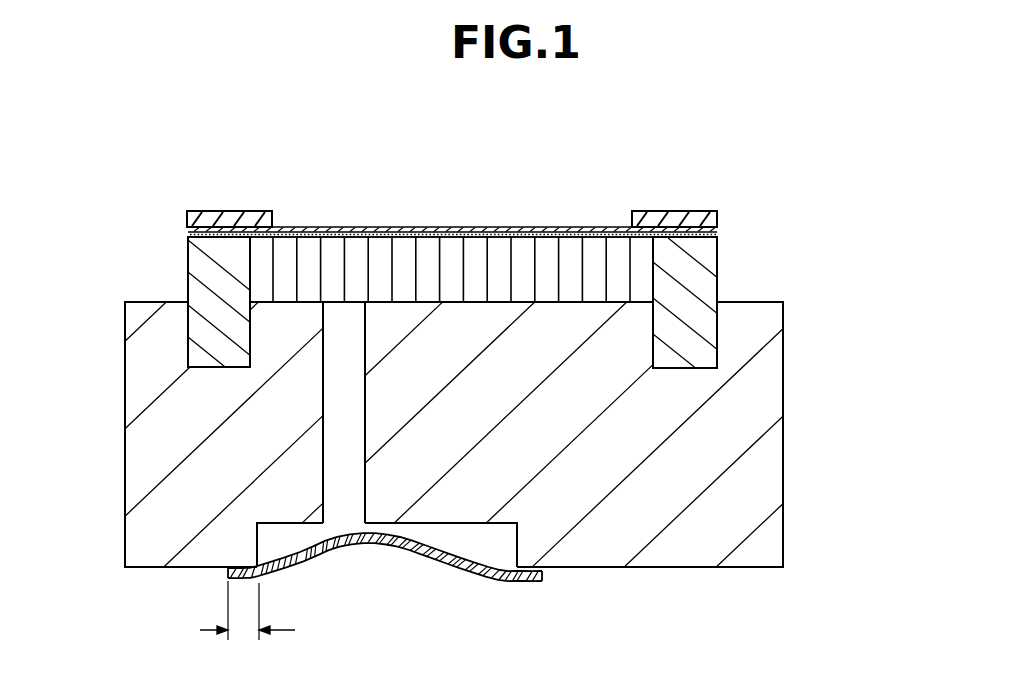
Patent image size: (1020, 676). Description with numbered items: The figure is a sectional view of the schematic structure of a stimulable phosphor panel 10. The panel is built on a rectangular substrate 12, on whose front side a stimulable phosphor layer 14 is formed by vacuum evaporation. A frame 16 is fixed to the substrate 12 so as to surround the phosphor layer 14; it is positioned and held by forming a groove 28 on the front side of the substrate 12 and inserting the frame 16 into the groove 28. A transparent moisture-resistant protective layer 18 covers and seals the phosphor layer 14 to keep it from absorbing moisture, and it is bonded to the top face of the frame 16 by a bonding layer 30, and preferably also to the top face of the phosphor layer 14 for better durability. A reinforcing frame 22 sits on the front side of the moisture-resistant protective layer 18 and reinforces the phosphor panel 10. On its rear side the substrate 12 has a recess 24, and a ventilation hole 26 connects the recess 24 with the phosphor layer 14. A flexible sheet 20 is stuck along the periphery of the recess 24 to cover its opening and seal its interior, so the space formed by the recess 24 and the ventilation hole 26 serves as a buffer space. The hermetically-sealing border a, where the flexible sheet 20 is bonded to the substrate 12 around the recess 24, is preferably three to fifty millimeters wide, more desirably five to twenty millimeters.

The stimulable phosphor panel 10 is at (627, 143).
The substrate 12 is at (757, 470).
The stimulable phosphor layer 14 is at (550, 262).
The frame 16 is at (195, 262).
The moisture-resistant protective layer 18 is at (428, 227).
The flexible sheet 20 is at (452, 558).
The reinforcing frame 22 is at (236, 212).
The recess 24 is at (477, 523).
The ventilation hole 26 is at (333, 449).
The groove 28 is at (186, 358).
The bonding layer 30 is at (718, 238).
The hermetically-sealing border a is at (247, 622).